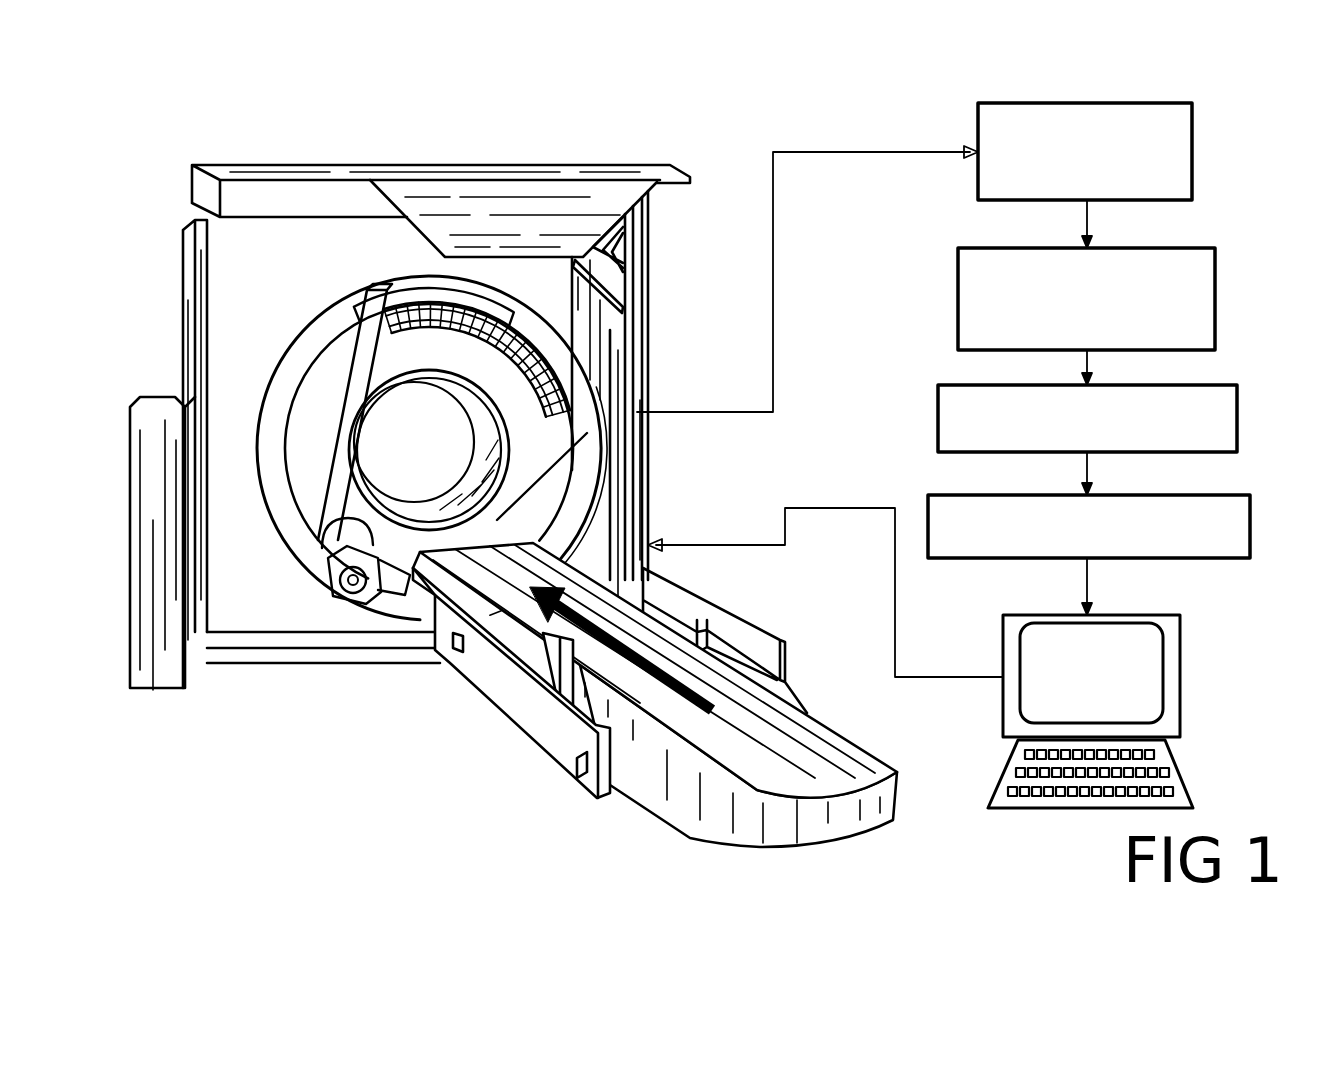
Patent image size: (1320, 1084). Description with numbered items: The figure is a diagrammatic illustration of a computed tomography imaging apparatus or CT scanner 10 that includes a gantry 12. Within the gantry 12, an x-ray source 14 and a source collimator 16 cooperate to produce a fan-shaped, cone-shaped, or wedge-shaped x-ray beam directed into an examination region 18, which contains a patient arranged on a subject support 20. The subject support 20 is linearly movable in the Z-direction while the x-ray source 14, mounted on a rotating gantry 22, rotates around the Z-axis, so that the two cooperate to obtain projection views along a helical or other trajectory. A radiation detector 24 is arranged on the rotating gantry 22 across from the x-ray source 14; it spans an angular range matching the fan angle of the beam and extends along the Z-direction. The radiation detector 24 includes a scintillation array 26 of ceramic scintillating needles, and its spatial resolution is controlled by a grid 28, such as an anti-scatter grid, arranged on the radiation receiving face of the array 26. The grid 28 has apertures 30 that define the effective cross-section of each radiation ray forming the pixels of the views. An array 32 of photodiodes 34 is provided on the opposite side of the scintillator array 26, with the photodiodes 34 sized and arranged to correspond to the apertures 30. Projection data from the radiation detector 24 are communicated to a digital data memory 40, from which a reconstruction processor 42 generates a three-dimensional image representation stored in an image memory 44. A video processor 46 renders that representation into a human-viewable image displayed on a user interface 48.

The CT scanner 10 is at (458, 113).
The gantry 12 is at (597, 153).
The x-ray source 14 is at (355, 578).
The source collimator 16 is at (350, 520).
The examination region 18 is at (400, 437).
The subject support 20 is at (792, 753).
The rotating gantry 22 is at (340, 423).
The radiation detector 24 is at (560, 375).
The scintillation array 26 is at (393, 322).
The grid 28 is at (435, 330).
The apertures 30 is at (500, 345).
The array of photodiodes 32 is at (438, 305).
The photodiodes 34 is at (462, 312).
The digital data memory 40 is at (1178, 191).
The reconstruction processor 42 is at (1187, 342).
The image memory 44 is at (1230, 437).
The video processor 46 is at (1242, 547).
The user interface 48 is at (1180, 697).